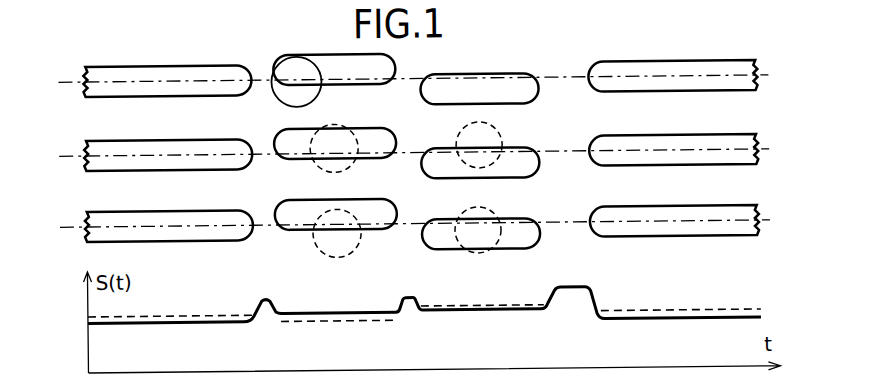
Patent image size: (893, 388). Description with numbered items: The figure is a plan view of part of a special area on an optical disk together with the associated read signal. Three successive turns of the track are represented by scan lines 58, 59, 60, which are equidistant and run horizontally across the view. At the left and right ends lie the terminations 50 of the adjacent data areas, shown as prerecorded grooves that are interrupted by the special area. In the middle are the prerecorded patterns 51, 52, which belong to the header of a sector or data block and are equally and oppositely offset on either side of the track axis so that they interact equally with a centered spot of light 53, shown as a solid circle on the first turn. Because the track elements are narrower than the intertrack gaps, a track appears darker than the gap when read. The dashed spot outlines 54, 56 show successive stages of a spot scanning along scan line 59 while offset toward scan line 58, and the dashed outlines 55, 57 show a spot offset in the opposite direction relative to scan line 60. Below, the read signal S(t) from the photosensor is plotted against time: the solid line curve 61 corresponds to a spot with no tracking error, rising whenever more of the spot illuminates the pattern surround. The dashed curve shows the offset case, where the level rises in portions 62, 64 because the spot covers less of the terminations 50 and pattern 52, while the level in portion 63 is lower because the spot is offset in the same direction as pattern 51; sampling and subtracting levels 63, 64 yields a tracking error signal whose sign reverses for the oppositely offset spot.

The terminations 50 is at (137, 67).
The prerecorded pattern 51 is at (322, 57).
The prerecorded pattern 52 is at (536, 107).
The spot of light 53 is at (278, 98).
The spot outline 54 is at (318, 168).
The spot outline 55 is at (318, 252).
The spot outline 56 is at (462, 130).
The spot outline 57 is at (466, 215).
The scan line 58 is at (73, 84).
The scan line 59 is at (74, 158).
The scan line 60 is at (86, 233).
The solid line curve 61 is at (222, 326).
The signal portion 62 is at (185, 284).
The signal portion 63 is at (350, 325).
The signal portion 64 is at (476, 309).